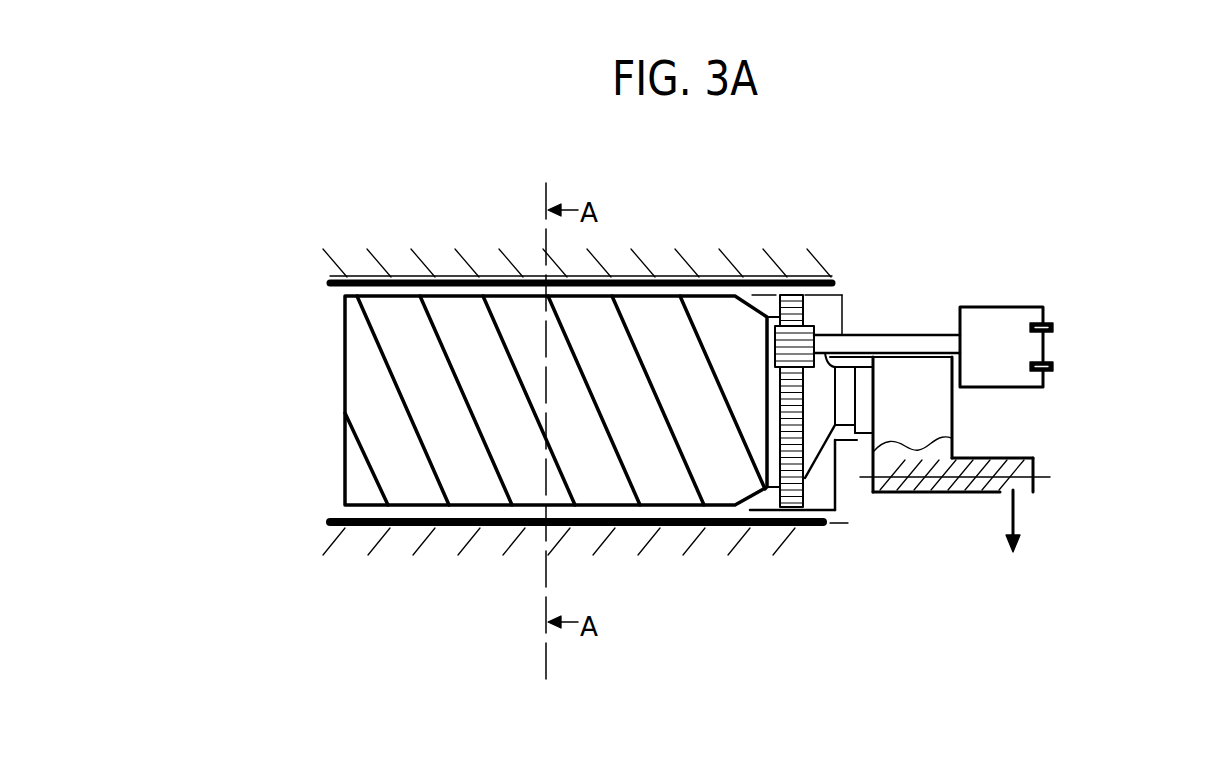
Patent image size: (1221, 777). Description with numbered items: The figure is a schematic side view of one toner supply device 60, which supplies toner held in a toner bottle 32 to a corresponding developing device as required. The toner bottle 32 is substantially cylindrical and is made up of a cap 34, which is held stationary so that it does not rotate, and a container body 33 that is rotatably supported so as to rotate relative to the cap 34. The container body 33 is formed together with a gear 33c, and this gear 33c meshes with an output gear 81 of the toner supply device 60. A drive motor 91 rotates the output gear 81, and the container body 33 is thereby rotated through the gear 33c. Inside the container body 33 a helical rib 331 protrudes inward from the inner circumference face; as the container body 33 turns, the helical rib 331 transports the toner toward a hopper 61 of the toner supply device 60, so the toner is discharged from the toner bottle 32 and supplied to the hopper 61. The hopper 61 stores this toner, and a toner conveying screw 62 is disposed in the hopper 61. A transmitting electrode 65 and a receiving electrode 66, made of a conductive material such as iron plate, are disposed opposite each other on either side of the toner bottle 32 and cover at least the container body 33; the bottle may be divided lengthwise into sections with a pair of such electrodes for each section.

The toner bottle 32 is at (425, 350).
The container body 33 is at (493, 390).
The helical rib 331 is at (425, 460).
The gear 33c is at (790, 295).
The cap 34 is at (843, 306).
The toner supply device 60 is at (973, 358).
The hopper 61 is at (950, 405).
The toner conveying screw 62 is at (1040, 473).
The transmitting electrode 65 is at (498, 278).
The receiving electrode 66 is at (493, 528).
The output gear 81 is at (818, 322).
The drive motor 91 is at (992, 307).